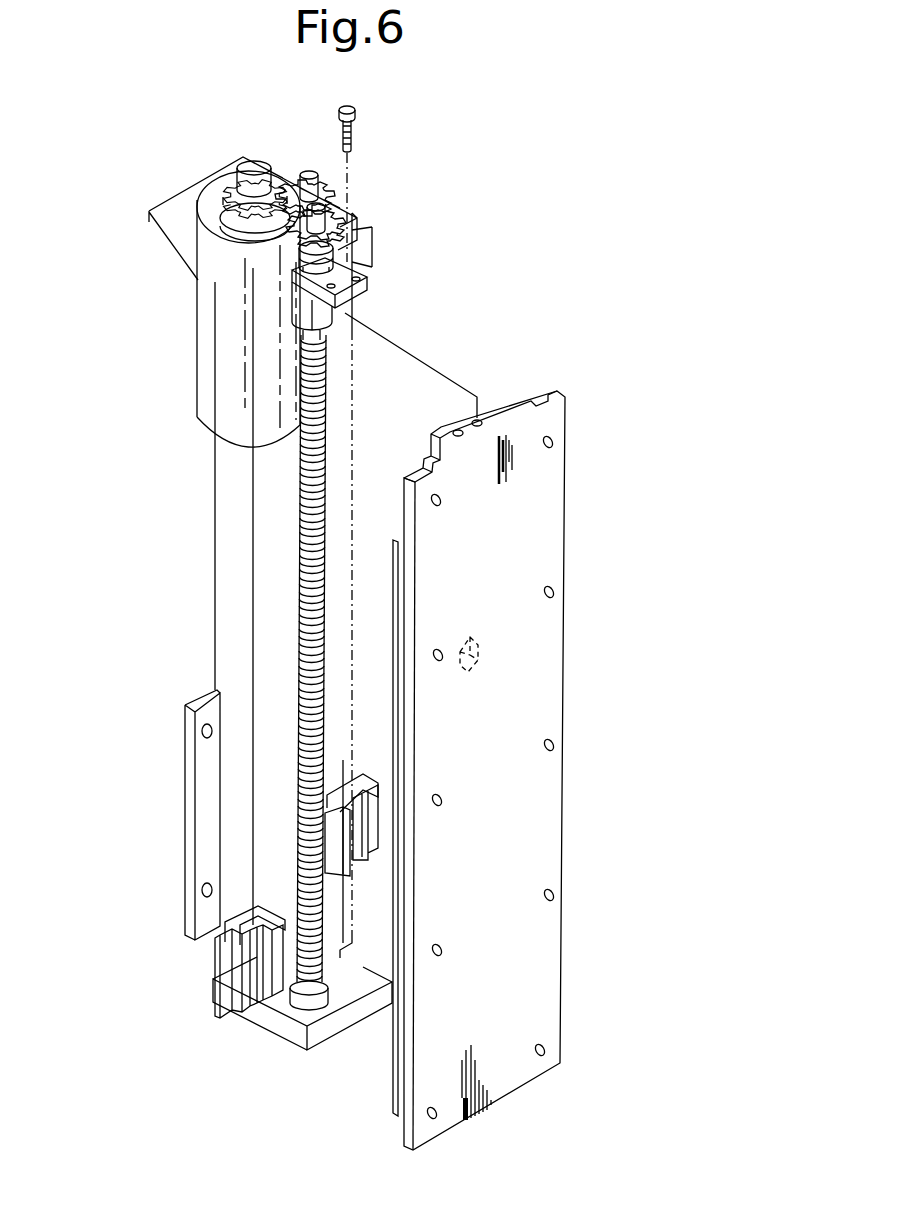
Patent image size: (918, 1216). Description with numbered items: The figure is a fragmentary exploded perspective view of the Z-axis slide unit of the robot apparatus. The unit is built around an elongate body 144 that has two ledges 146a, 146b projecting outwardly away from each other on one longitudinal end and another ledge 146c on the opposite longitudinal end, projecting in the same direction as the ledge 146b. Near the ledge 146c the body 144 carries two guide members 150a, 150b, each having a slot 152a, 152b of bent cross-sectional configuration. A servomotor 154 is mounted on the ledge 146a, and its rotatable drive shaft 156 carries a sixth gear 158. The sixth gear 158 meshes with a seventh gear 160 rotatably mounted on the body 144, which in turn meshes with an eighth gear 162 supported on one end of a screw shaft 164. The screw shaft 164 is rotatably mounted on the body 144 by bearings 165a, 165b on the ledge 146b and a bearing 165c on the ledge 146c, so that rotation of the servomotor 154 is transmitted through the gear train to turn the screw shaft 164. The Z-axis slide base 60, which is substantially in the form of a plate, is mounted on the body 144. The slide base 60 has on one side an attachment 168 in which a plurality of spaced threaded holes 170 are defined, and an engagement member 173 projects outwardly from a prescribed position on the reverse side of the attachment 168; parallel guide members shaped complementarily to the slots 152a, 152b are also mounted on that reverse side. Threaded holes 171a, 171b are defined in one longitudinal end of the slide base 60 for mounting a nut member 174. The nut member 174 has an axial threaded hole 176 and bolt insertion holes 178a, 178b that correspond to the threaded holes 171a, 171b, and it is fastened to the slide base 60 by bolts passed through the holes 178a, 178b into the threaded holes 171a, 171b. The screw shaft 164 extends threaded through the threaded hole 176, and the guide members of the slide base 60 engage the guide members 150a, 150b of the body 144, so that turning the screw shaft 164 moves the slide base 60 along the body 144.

The Z-axis slide base 60 is at (482, 749).
The body 144 is at (276, 655).
The ledge 146a is at (180, 236).
The ledge 146b is at (374, 250).
The ledge 146c is at (290, 1055).
The guide member 150a is at (238, 988).
The guide member 150b is at (368, 790).
The slot 152a is at (270, 975).
The slot 152b is at (352, 838).
The servomotor 154 is at (205, 390).
The drive shaft 156 is at (253, 170).
The sixth gear 158 is at (215, 190).
The seventh gear 160 is at (340, 190).
The eighth gear 162 is at (347, 226).
The screw shaft 164 is at (333, 372).
The bearing 165a is at (298, 255).
The bearing 165b is at (300, 268).
The bearing 165c is at (310, 1000).
The attachment 168 is at (533, 688).
The threaded holes 170 is at (551, 591).
The threaded hole 171a is at (456, 430).
The threaded hole 171b is at (479, 420).
The engagement member 173 is at (480, 645).
The nut member 174 is at (366, 303).
The threaded hole 176 is at (345, 320).
The bolt insertion hole 178a is at (358, 281).
The bolt insertion hole 178b is at (335, 285).